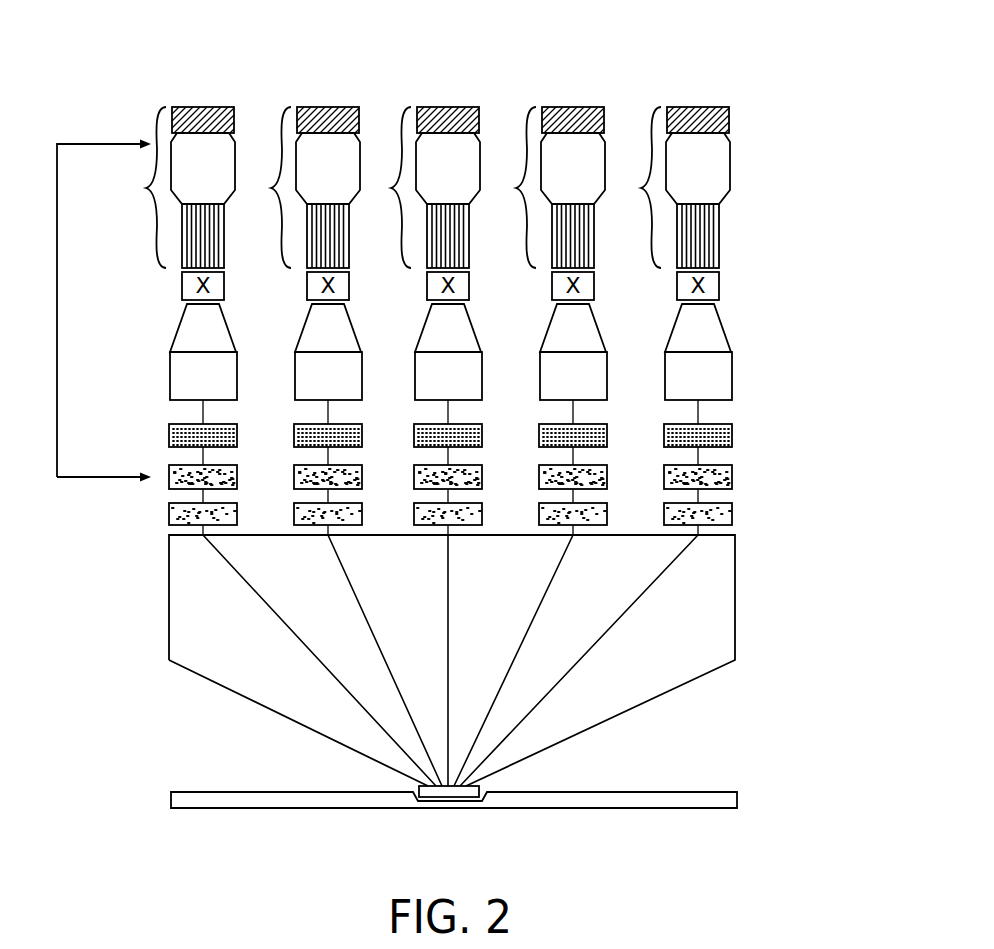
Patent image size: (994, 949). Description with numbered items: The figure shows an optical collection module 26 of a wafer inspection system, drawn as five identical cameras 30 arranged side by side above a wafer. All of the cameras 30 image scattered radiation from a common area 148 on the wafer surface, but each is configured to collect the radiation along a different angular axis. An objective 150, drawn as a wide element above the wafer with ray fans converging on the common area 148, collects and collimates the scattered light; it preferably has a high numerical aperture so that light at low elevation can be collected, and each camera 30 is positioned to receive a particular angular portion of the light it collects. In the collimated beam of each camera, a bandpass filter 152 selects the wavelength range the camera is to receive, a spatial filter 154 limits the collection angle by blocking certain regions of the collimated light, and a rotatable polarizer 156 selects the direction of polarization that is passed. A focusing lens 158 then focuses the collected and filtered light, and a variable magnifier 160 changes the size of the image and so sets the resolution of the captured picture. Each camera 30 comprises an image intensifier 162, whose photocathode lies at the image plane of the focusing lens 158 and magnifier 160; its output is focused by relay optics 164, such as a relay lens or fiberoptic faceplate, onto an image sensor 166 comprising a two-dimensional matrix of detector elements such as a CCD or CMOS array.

The optical collection module 26 is at (748, 80).
The camera 30 is at (456, 189).
The common area 148 is at (432, 789).
The objective 150 is at (736, 597).
The bandpass filter 152 is at (725, 512).
The spatial filter 154 is at (725, 474).
The rotatable polarizer 156 is at (725, 433).
The focusing lens 158 is at (722, 379).
The variable magnifier 160 is at (718, 284).
The image intensifier 162 is at (717, 230).
The relay optics 164 is at (722, 166).
The image sensor 166 is at (731, 111).